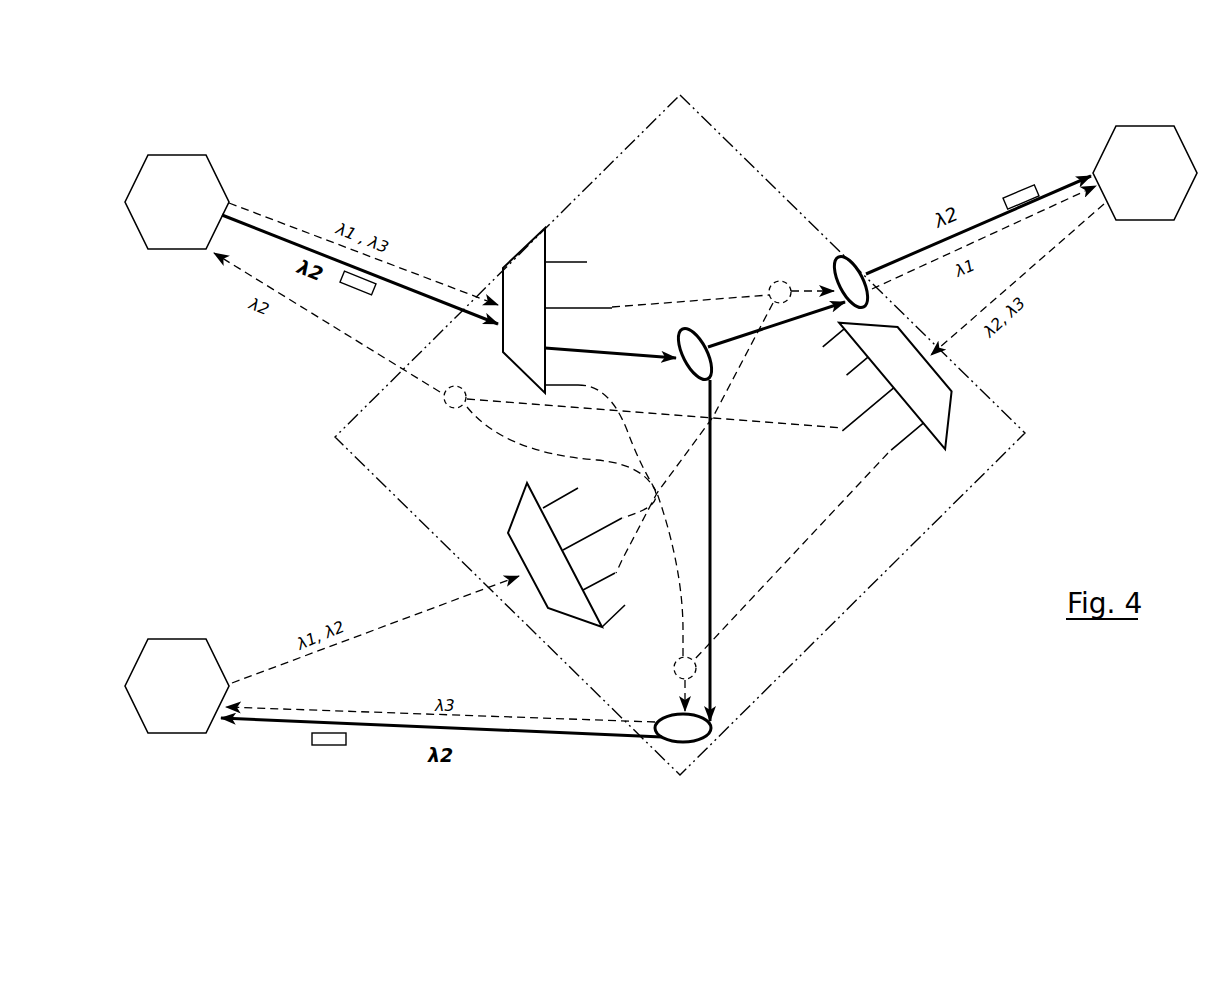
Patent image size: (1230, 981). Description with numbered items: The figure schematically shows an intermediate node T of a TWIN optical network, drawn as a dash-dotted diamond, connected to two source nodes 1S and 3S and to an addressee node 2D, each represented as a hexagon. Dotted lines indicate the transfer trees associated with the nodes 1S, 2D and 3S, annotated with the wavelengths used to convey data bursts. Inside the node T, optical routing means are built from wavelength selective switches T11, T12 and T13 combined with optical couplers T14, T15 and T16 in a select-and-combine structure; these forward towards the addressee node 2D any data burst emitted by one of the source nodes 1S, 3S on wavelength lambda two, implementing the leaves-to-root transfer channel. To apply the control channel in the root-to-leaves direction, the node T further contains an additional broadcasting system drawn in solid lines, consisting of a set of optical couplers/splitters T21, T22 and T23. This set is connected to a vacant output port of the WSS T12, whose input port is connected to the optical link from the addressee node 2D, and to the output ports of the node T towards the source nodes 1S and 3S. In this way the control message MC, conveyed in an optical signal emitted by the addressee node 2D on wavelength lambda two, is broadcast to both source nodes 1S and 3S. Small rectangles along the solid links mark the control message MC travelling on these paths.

The intermediate node T is at (703, 122).
The source node 1S is at (1145, 173).
The addressee node 2D is at (177, 202).
The source node 3S is at (177, 686).
The wavelength selective switch T11 is at (944, 405).
The wavelength selective switch T12 is at (527, 253).
The wavelength selective switch T13 is at (508, 538).
The optical coupler T14 is at (448, 405).
The optical coupler T15 is at (769, 290).
The optical coupler T16 is at (673, 668).
The optical coupler/splitter T21 is at (697, 366).
The optical coupler/splitter T22 is at (848, 258).
The optical coupler/splitter T23 is at (712, 742).
The control message MC is at (362, 290).